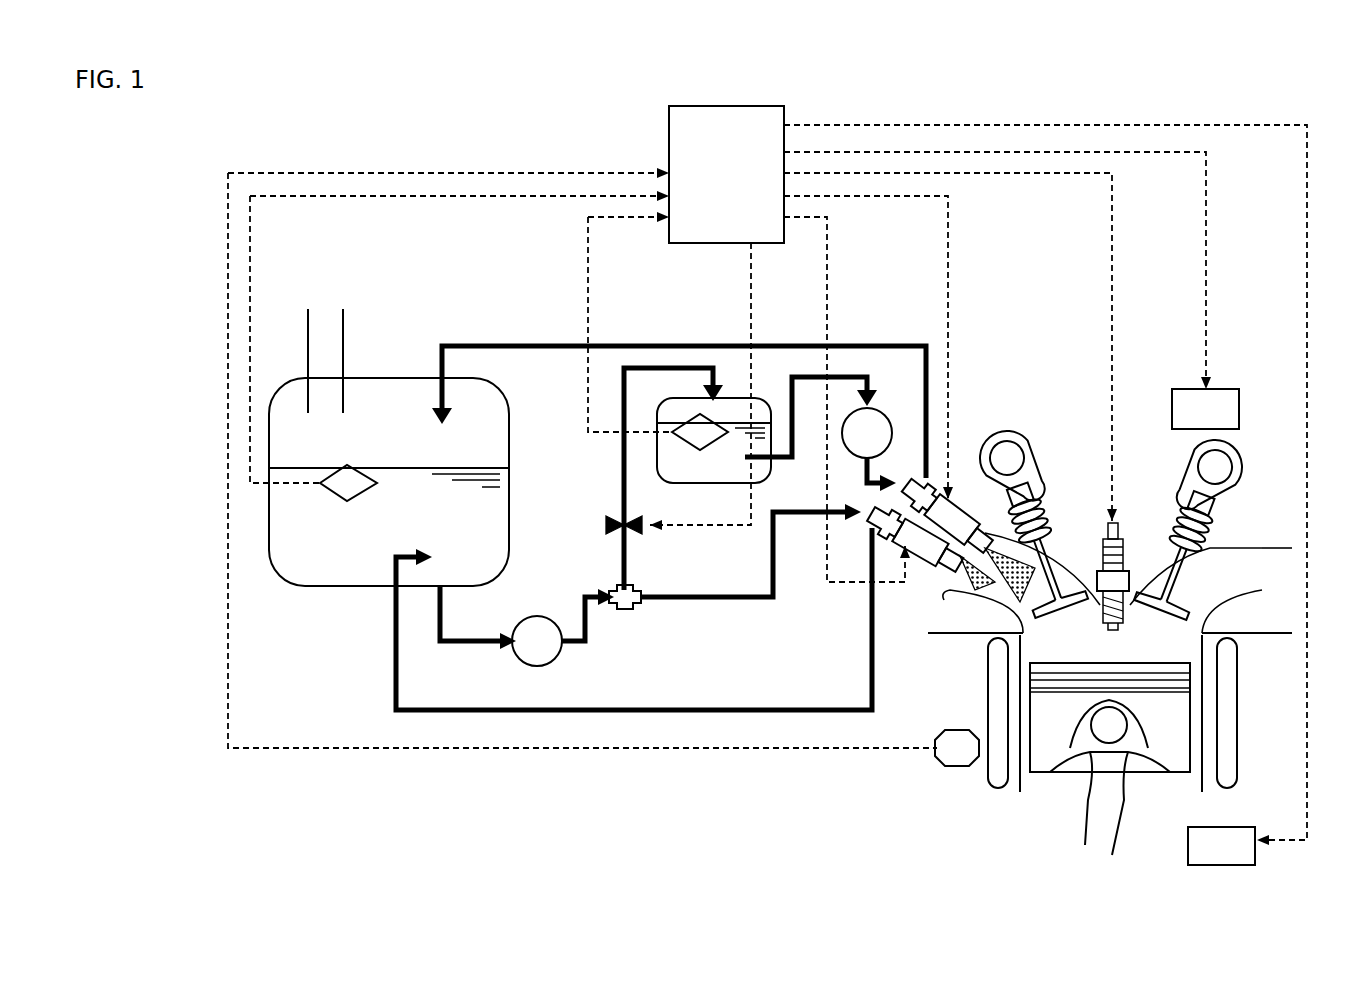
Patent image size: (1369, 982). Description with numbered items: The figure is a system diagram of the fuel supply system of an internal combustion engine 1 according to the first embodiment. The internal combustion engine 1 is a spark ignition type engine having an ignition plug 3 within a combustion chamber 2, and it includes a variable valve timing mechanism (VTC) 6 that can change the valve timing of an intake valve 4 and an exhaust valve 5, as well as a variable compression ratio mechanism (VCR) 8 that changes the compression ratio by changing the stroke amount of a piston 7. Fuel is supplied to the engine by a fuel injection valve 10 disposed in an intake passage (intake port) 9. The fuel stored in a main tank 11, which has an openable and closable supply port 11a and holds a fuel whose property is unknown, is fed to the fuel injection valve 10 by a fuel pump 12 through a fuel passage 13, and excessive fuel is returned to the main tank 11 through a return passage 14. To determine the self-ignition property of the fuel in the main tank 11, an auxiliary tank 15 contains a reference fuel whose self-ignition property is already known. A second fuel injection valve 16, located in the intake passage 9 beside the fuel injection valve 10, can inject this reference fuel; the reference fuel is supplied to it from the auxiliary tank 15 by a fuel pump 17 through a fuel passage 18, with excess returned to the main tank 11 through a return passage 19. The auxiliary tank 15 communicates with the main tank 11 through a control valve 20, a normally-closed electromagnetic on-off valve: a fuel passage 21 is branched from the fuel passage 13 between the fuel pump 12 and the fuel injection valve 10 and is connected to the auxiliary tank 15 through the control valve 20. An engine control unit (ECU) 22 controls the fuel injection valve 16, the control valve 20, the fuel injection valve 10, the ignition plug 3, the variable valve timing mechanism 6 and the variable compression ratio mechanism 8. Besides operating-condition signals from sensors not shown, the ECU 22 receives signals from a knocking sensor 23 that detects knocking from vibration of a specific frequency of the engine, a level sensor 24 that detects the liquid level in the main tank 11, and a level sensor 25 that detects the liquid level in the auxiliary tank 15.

The internal combustion engine 1 is at (1272, 710).
The combustion chamber 2 is at (1040, 648).
The ignition plug 3 is at (1121, 546).
The intake valve 4 is at (1043, 562).
The exhaust valve 5 is at (1210, 555).
The variable valve timing mechanism 6 is at (1239, 409).
The piston 7 is at (1180, 748).
The variable compression ratio mechanism 8 is at (1246, 826).
The intake passage 9 is at (947, 592).
The fuel injection valve 10 is at (915, 560).
The main tank 11 is at (509, 461).
The supply port 11a is at (343, 340).
The fuel pump 12 is at (540, 614).
The fuel passage 13 is at (728, 600).
The return passage 14 is at (624, 712).
The auxiliary tank 15 is at (727, 483).
The fuel injection valve 16 is at (940, 490).
The fuel pump 17 is at (875, 408).
The fuel passage 18 is at (862, 473).
The return passage 19 is at (650, 348).
The control valve 20 is at (604, 525).
The fuel passage 21 is at (622, 404).
The engine control unit 22 is at (669, 180).
The knocking sensor 23 is at (956, 766).
The level sensor 24 is at (350, 466).
The level sensor 25 is at (726, 420).